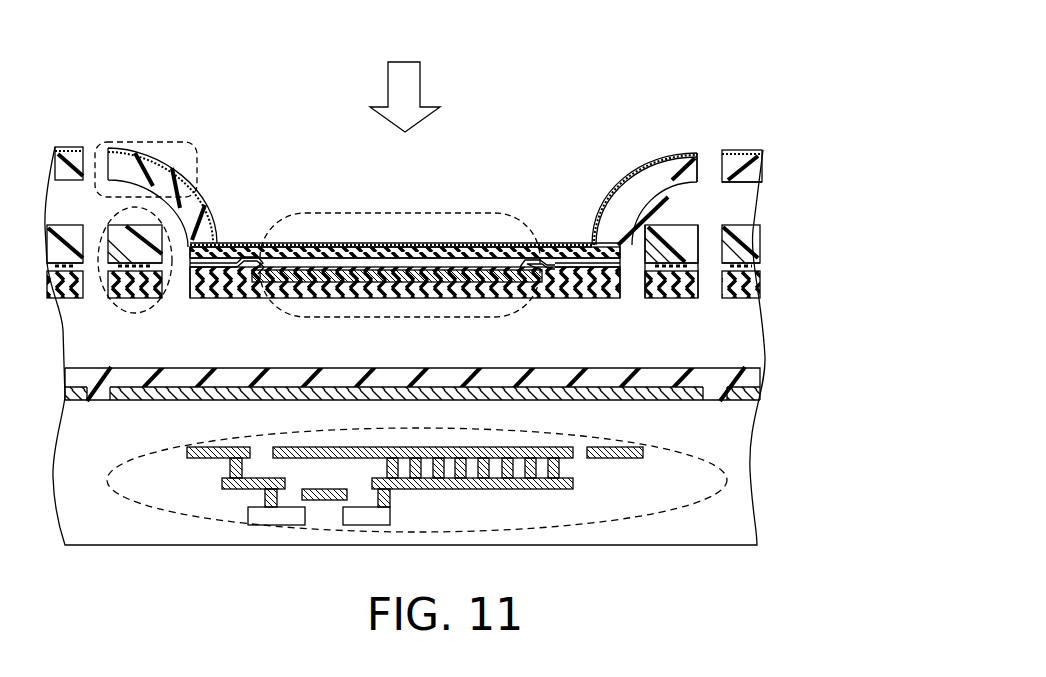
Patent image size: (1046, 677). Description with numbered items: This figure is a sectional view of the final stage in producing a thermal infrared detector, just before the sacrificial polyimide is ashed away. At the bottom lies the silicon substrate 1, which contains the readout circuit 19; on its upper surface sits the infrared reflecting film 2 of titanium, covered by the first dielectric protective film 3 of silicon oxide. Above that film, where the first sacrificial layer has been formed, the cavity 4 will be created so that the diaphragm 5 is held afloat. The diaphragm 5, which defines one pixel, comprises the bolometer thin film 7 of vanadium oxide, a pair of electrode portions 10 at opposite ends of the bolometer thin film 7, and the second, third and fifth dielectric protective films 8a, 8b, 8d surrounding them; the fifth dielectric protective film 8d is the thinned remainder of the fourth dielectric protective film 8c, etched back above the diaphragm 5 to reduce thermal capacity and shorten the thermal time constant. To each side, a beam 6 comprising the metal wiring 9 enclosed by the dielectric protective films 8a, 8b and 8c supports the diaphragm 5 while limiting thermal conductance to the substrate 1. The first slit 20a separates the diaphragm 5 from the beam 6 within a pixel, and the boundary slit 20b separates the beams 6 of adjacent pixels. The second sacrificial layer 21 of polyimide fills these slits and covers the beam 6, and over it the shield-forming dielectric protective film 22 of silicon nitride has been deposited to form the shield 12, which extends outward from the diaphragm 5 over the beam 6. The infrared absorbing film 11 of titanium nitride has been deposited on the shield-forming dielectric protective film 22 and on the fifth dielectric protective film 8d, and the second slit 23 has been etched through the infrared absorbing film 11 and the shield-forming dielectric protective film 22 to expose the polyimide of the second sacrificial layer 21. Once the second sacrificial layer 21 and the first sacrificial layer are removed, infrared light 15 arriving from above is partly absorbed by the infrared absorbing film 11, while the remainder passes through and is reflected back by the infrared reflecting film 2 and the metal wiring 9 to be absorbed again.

The silicon substrate 1 is at (740, 520).
The infrared reflecting film 2 is at (663, 400).
The first dielectric protective film 3 is at (753, 378).
The cavity 4 is at (750, 352).
The diaphragm 5 is at (273, 213).
The beam 6 is at (140, 207).
The bolometer thin film 7 is at (360, 268).
The second dielectric protective film 8a is at (745, 295).
The third dielectric protective film 8b is at (695, 268).
The fourth dielectric protective film 8c is at (687, 250).
The fifth dielectric protective film 8d is at (412, 262).
The metal wiring 9 is at (668, 248).
The electrode portion 10 is at (522, 262).
The infrared absorbing film 11 is at (468, 262).
The shield 12 is at (196, 148).
The infrared light 15 is at (422, 73).
The readout circuit 19 is at (667, 515).
The first slit 20a is at (632, 240).
The boundary slit 20b is at (713, 227).
The second sacrificial layer 21 is at (743, 210).
The shield-forming dielectric protective film 22 is at (750, 167).
The second slit 23 is at (703, 175).